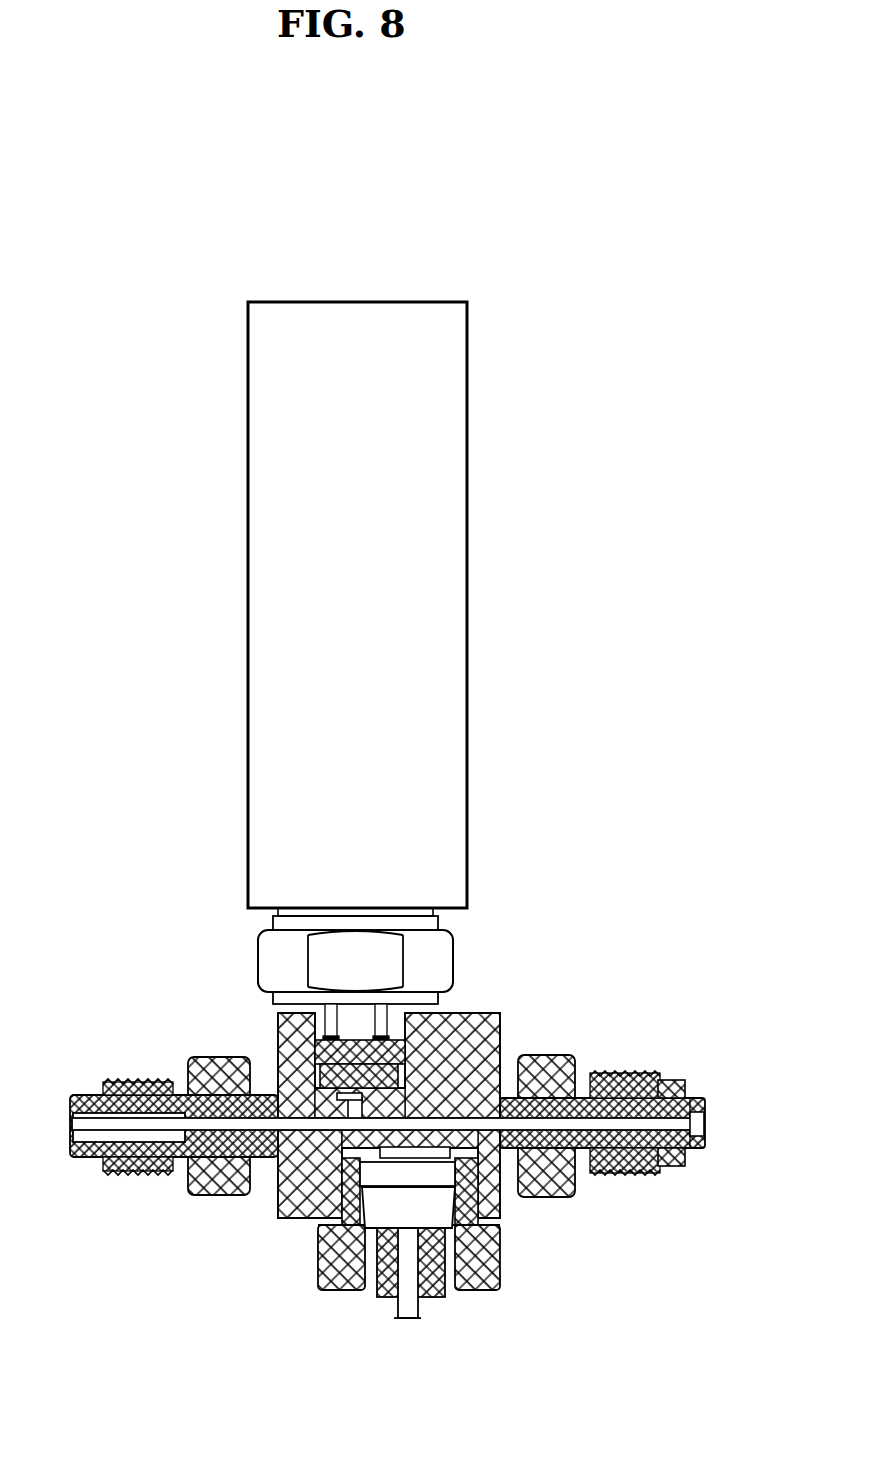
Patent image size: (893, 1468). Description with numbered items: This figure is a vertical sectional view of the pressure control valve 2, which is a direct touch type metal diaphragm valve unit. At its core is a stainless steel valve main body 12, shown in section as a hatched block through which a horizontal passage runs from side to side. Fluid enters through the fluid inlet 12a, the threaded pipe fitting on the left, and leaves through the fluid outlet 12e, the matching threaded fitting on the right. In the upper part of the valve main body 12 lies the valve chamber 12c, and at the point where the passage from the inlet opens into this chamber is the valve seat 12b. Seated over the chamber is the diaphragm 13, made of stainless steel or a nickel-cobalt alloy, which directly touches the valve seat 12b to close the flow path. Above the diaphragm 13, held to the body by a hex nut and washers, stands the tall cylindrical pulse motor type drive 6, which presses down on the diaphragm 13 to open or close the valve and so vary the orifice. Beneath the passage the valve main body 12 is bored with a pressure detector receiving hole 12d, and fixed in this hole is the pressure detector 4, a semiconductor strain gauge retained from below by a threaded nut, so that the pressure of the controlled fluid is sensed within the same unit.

The pressure control valve 2 is at (352, 672).
The pressure detector 4 is at (387, 1207).
The pulse motor type drive 6 is at (467, 515).
The valve main body 12 is at (340, 1094).
The fluid inlet 12a is at (98, 1128).
The valve seat 12b is at (352, 1142).
The valve chamber 12c is at (465, 1013).
The pressure detector receiving hole 12d is at (413, 1167).
The fluid outlet 12e is at (553, 1108).
The diaphragm 13 is at (282, 1082).